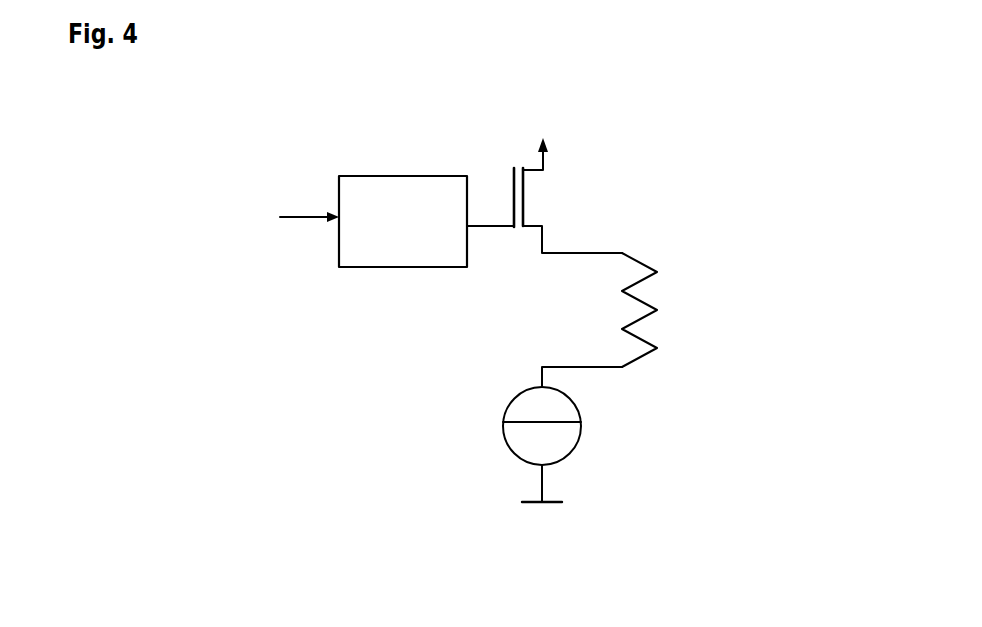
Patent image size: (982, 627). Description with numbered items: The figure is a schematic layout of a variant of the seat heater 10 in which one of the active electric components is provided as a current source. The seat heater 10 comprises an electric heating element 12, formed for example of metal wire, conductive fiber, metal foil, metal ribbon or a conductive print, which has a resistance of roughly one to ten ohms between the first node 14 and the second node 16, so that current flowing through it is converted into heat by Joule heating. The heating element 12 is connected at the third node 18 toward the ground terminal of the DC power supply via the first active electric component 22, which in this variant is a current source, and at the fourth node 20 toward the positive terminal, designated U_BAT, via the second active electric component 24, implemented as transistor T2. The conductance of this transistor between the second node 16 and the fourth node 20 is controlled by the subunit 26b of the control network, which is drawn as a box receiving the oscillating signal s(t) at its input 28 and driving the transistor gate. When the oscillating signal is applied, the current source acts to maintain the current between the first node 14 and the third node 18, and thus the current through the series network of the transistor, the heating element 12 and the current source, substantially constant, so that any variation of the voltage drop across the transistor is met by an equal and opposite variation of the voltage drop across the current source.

The seat heater 10 is at (314, 146).
The electric heating element 12 is at (625, 293).
The first node 14 is at (600, 367).
The second node 16 is at (558, 257).
The third node 18 is at (543, 487).
The fourth node 20 is at (547, 167).
The first active electric component 22 is at (486, 430).
The second active electric component 24 is at (503, 240).
The subunit of the control network 26b is at (413, 267).
The input signal s(t) 28 is at (302, 220).